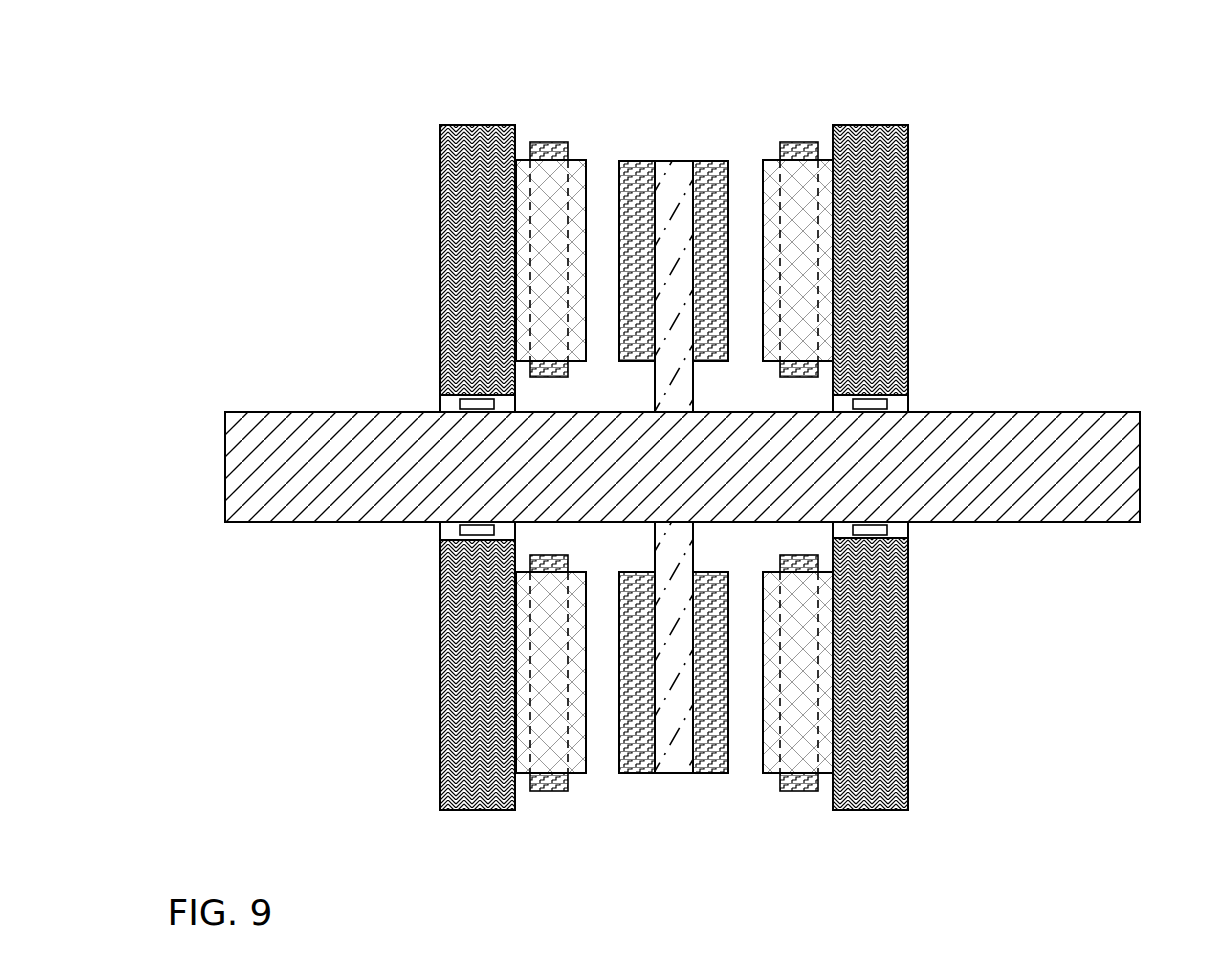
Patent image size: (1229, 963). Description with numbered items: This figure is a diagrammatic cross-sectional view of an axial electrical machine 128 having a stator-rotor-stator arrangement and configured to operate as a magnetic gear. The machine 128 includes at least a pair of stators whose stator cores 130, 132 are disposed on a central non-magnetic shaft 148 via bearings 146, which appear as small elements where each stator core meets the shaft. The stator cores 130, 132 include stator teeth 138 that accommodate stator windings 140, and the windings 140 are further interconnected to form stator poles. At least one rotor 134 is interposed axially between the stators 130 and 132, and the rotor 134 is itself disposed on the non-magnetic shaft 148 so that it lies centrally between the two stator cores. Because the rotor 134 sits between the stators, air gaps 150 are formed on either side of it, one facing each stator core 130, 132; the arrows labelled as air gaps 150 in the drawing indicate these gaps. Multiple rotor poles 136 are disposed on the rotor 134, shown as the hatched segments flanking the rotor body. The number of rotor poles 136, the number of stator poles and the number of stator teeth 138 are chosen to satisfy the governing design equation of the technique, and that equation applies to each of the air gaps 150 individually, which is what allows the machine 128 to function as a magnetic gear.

The axial electrical machine 128 is at (1088, 106).
The stator core 130 is at (478, 125).
The stator core 132 is at (870, 125).
The rotor 134 is at (667, 479).
The rotor poles 136 is at (635, 775).
The stator teeth 138 is at (587, 178).
The stator windings 140 is at (555, 142).
The bearings 146 is at (460, 403).
The non-magnetic shaft 148 is at (225, 465).
The air gaps 150 is at (597, 297).